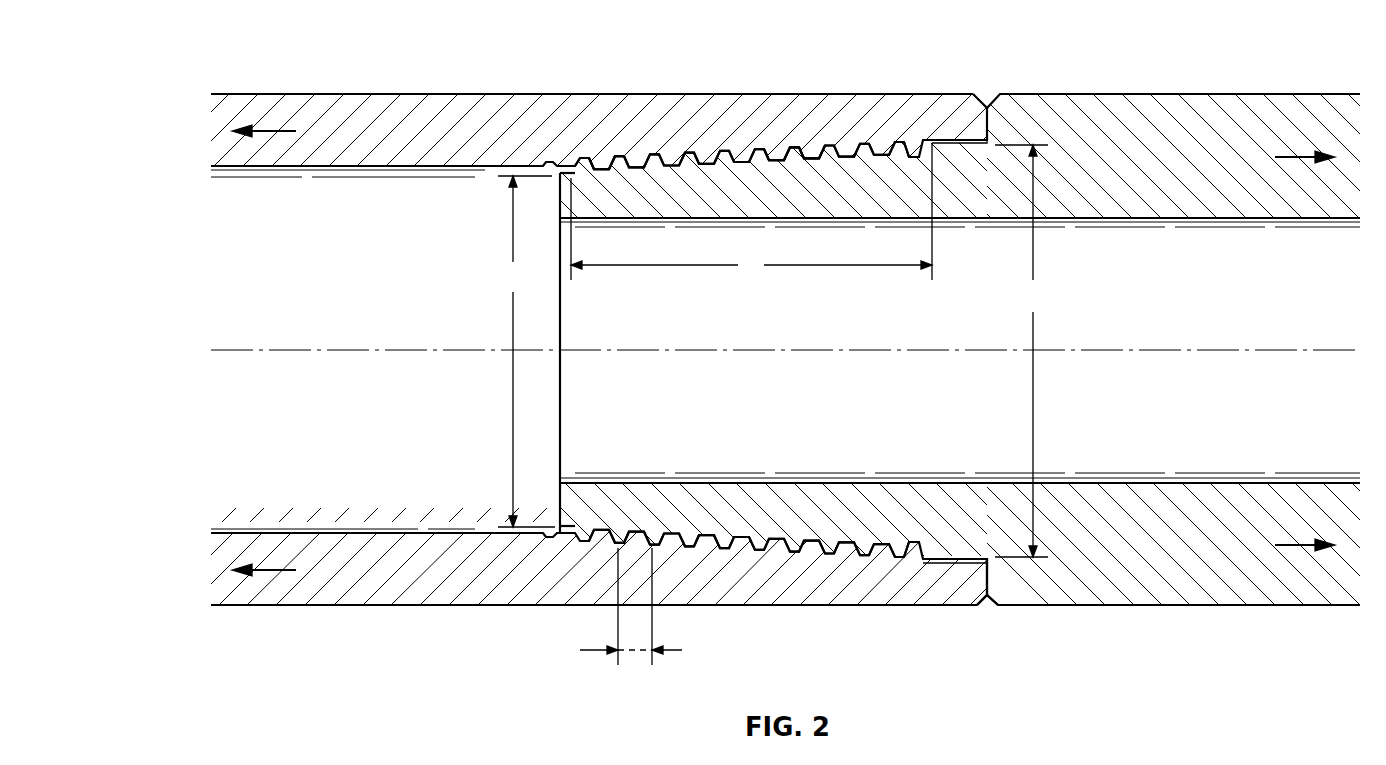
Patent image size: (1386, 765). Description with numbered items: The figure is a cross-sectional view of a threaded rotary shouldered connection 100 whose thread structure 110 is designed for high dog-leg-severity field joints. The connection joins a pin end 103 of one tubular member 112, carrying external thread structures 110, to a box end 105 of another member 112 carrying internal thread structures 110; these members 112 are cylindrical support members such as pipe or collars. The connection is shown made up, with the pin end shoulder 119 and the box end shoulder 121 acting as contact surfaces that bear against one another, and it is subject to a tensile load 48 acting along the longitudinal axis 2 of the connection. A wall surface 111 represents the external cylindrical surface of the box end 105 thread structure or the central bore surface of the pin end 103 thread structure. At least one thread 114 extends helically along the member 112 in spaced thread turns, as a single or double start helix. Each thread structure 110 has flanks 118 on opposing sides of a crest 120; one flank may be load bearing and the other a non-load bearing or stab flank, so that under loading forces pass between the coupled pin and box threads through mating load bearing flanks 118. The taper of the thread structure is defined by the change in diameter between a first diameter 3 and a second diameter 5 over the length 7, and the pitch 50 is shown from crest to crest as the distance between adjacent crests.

The rotary shouldered connection 100 is at (430, 30).
The member 112 is at (357, 94).
The wall surface 111 is at (524, 94).
The thread 114 is at (621, 157).
The thread structure 110 is at (683, 150).
The flank 118 is at (778, 152).
The crest 120 is at (795, 146).
The pin end 103 is at (776, 202).
The box end 105 is at (818, 589).
The longitudinal axis 2 is at (305, 350).
The first diameter 3 is at (526, 351).
The second diameter 5 is at (1021, 351).
The length 7 is at (751, 213).
The tensile load 48 is at (273, 573).
The pitch 50 is at (615, 607).
The box end shoulder 121 is at (983, 577).
The pin end shoulder 119 is at (994, 584).